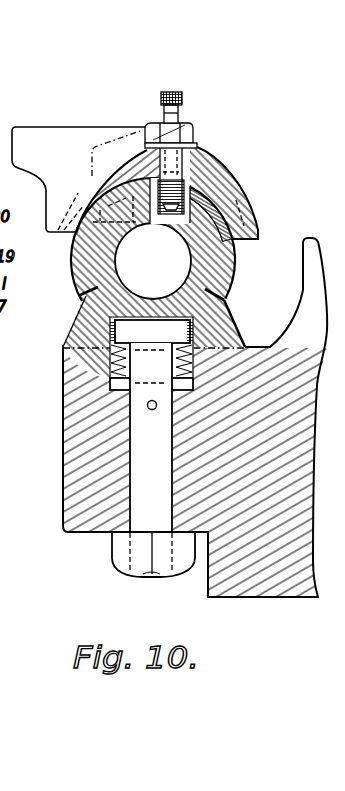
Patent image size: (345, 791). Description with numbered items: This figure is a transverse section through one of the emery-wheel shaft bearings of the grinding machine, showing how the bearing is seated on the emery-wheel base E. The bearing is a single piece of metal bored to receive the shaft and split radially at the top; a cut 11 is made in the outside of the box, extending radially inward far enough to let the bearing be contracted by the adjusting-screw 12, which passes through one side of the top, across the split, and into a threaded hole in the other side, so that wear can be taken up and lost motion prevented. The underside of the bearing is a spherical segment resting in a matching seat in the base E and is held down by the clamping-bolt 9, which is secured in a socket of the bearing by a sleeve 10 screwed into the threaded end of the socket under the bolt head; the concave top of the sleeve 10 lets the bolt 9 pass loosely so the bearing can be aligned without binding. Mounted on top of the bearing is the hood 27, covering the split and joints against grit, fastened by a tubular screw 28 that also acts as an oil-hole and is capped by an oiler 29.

The clamping-bolt 9 is at (152, 123).
The sleeve 10 is at (93, 370).
The cut 11 is at (81, 293).
The adjusting-screw 12 is at (127, 200).
The hood 27 is at (198, 168).
The tubular screw 28 is at (167, 138).
The oiler 29 is at (161, 97).
The emery-wheel base E is at (265, 567).